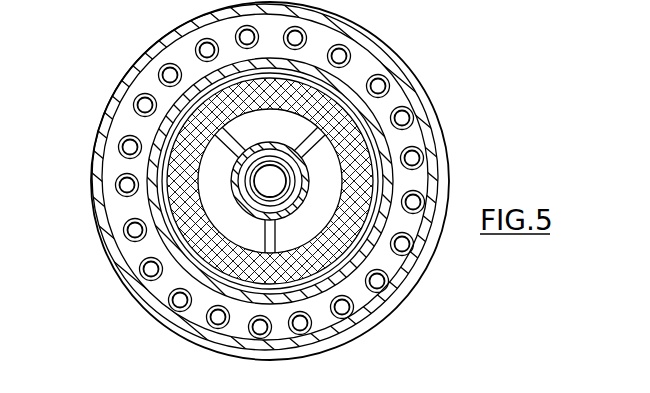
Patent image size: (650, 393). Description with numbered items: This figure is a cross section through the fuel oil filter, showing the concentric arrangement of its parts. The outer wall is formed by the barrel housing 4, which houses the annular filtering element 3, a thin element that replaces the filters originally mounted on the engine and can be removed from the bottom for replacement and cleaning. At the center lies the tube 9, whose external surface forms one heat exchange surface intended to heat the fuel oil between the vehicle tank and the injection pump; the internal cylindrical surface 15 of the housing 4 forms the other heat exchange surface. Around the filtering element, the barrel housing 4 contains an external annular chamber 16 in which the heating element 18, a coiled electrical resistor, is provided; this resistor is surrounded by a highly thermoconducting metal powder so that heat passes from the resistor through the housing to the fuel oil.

The annular filtering element 3 is at (337, 212).
The barrel housing 4 is at (429, 170).
The tube 9 is at (272, 162).
The internal cylindrical surface 15 is at (363, 228).
The external annular chamber 16 is at (148, 90).
The heating element 18 is at (398, 110).